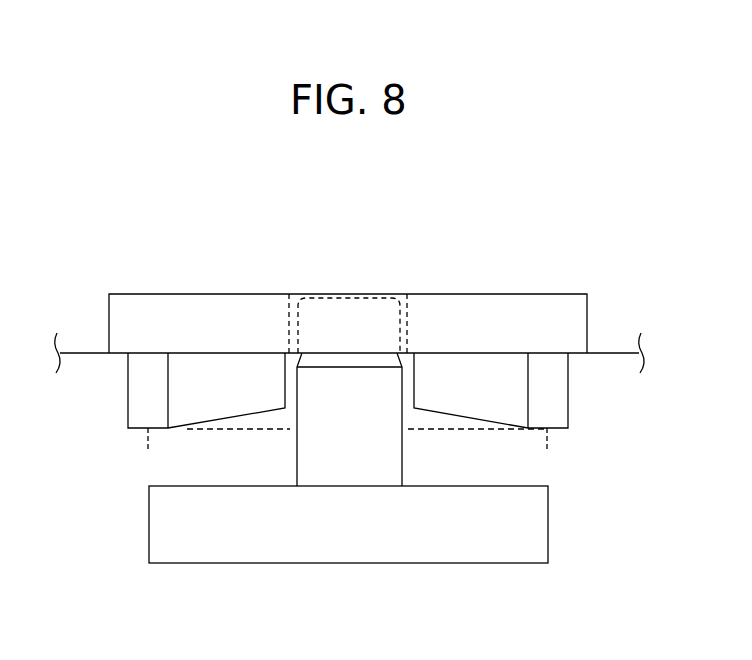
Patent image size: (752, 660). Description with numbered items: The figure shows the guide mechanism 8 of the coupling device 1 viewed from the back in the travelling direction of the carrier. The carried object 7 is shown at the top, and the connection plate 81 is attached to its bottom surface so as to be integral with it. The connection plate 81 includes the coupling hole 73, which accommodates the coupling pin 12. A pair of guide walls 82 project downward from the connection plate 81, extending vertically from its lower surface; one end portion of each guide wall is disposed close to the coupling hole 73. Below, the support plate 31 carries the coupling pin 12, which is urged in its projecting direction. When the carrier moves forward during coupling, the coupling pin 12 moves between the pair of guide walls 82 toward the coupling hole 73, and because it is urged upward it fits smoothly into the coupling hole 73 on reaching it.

The coupling device 1 is at (138, 550).
The carried object 7 is at (607, 353).
The guide mechanism 8 is at (107, 408).
The coupling pin 12 is at (350, 378).
The support plate 31 is at (540, 526).
The coupling hole 73 is at (420, 358).
The connection plate 81 is at (552, 302).
The guide walls 82 is at (240, 408).